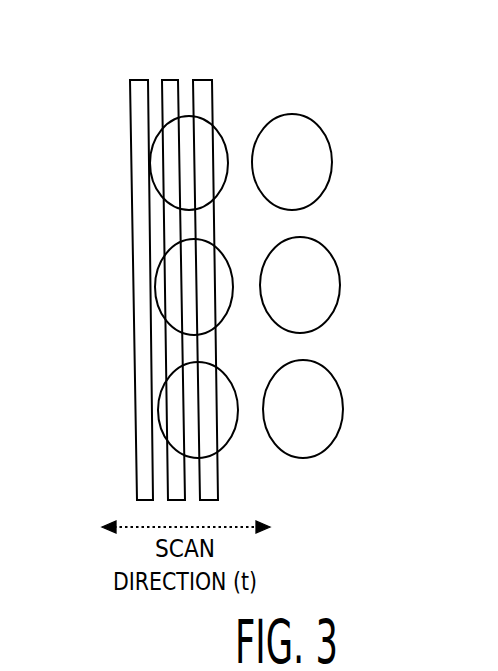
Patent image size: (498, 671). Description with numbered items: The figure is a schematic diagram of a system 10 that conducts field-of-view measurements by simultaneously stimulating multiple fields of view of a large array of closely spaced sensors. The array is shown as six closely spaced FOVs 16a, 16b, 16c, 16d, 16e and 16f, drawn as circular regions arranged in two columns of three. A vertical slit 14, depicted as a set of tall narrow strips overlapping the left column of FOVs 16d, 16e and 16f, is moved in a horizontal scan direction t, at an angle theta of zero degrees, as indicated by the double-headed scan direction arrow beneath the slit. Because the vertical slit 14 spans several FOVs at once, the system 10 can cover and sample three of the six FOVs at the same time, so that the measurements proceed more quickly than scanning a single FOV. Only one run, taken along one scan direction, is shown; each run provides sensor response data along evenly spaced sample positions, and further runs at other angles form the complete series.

The system 10 is at (405, 49).
The vertical slit 14 is at (137, 80).
The FOV 16a is at (332, 157).
The FOV 16b is at (340, 290).
The FOV 16c is at (342, 412).
The FOV 16d is at (157, 136).
The FOV 16e is at (163, 263).
The FOV 16f is at (160, 392).